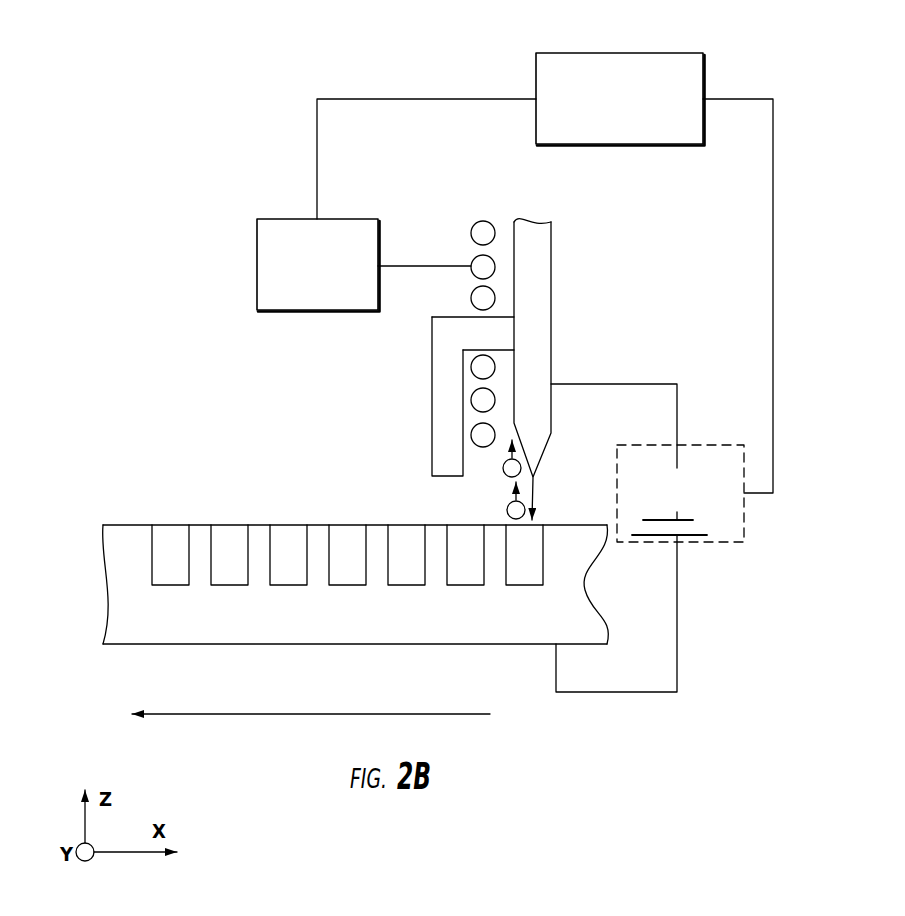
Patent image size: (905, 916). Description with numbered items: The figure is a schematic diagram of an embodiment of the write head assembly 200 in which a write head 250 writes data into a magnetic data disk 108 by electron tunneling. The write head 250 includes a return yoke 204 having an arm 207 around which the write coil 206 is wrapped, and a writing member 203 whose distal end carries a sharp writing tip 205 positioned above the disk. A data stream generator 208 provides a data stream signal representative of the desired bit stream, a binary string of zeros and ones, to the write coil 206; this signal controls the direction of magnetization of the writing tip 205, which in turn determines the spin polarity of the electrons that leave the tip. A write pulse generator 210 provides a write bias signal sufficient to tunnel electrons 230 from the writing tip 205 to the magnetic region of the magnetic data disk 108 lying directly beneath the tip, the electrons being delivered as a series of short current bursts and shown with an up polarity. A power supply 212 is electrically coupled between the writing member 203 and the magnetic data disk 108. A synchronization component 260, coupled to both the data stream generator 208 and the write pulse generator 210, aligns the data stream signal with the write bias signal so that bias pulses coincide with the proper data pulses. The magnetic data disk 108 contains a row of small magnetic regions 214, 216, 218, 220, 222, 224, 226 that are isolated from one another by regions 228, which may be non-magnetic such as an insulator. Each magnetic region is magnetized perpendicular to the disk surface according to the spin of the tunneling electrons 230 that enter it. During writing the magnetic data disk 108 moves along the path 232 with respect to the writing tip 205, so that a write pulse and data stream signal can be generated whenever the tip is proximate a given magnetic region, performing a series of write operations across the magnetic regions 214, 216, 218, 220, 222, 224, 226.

The write head assembly 200 is at (248, 88).
The synchronization component 260 is at (620, 53).
The data stream generator 208 is at (257, 265).
The write coil 206 is at (490, 222).
The arm 207 is at (455, 316).
The return yoke 204 is at (432, 380).
The writing member 203 is at (514, 423).
The writing tip 205 is at (543, 457).
The write head 250 is at (333, 336).
The electrons 230 is at (493, 500).
The magnetic data disk 108 is at (255, 458).
The magnetic region 226 is at (168, 585).
The magnetic region 224 is at (227, 585).
The magnetic region 222 is at (286, 585).
The magnetic region 220 is at (345, 585).
The magnetic region 218 is at (404, 585).
The magnetic region 216 is at (463, 585).
The magnetic region 214 is at (522, 585).
The regions 228 is at (318, 538).
The write pulse generator 210 is at (690, 543).
The power supply 212 is at (711, 521).
The path 232 is at (372, 712).